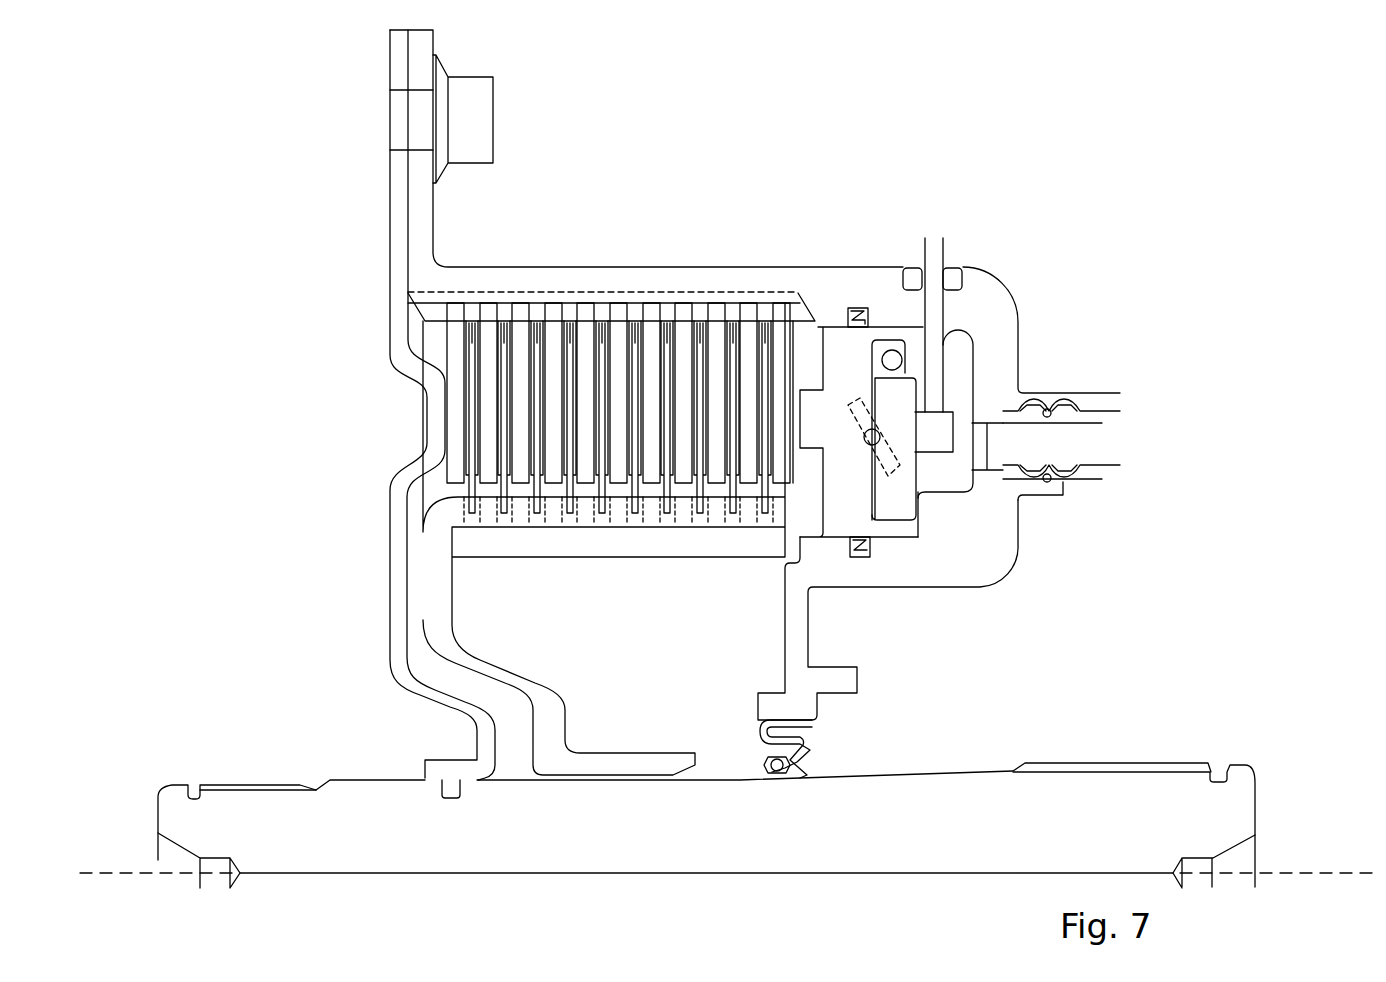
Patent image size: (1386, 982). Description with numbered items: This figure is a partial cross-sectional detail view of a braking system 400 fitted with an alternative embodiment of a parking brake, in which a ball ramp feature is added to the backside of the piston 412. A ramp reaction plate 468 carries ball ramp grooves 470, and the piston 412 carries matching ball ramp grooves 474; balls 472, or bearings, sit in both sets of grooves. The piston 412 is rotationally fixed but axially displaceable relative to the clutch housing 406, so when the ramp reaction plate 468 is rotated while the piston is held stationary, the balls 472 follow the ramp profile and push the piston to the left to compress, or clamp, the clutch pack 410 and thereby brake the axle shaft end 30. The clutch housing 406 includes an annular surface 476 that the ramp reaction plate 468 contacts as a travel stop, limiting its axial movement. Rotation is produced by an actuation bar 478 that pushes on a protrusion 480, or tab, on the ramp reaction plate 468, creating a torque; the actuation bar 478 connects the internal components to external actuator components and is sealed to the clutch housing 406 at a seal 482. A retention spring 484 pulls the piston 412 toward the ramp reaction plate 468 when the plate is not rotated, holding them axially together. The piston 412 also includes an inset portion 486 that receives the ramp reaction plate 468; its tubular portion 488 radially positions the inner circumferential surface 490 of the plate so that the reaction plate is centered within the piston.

The axle shaft end 30 is at (294, 850).
The braking system 400 is at (960, 182).
The clutch housing 406 is at (997, 312).
The clutch pack 410 is at (687, 234).
The piston 412 is at (845, 518).
The ramp reaction plate 468 is at (917, 510).
The ball ramp grooves 470 is at (948, 414).
The balls 472 is at (877, 432).
The ball ramp grooves 474 is at (858, 415).
The annular surface 476 is at (900, 495).
The actuation bar 478 is at (925, 263).
The protrusion 480 is at (940, 440).
The seal 482 is at (918, 282).
The retention spring 484 is at (896, 357).
The inset portion 486 is at (918, 480).
The tubular portion 488 is at (893, 537).
The inner circumferential surface 490 is at (905, 520).